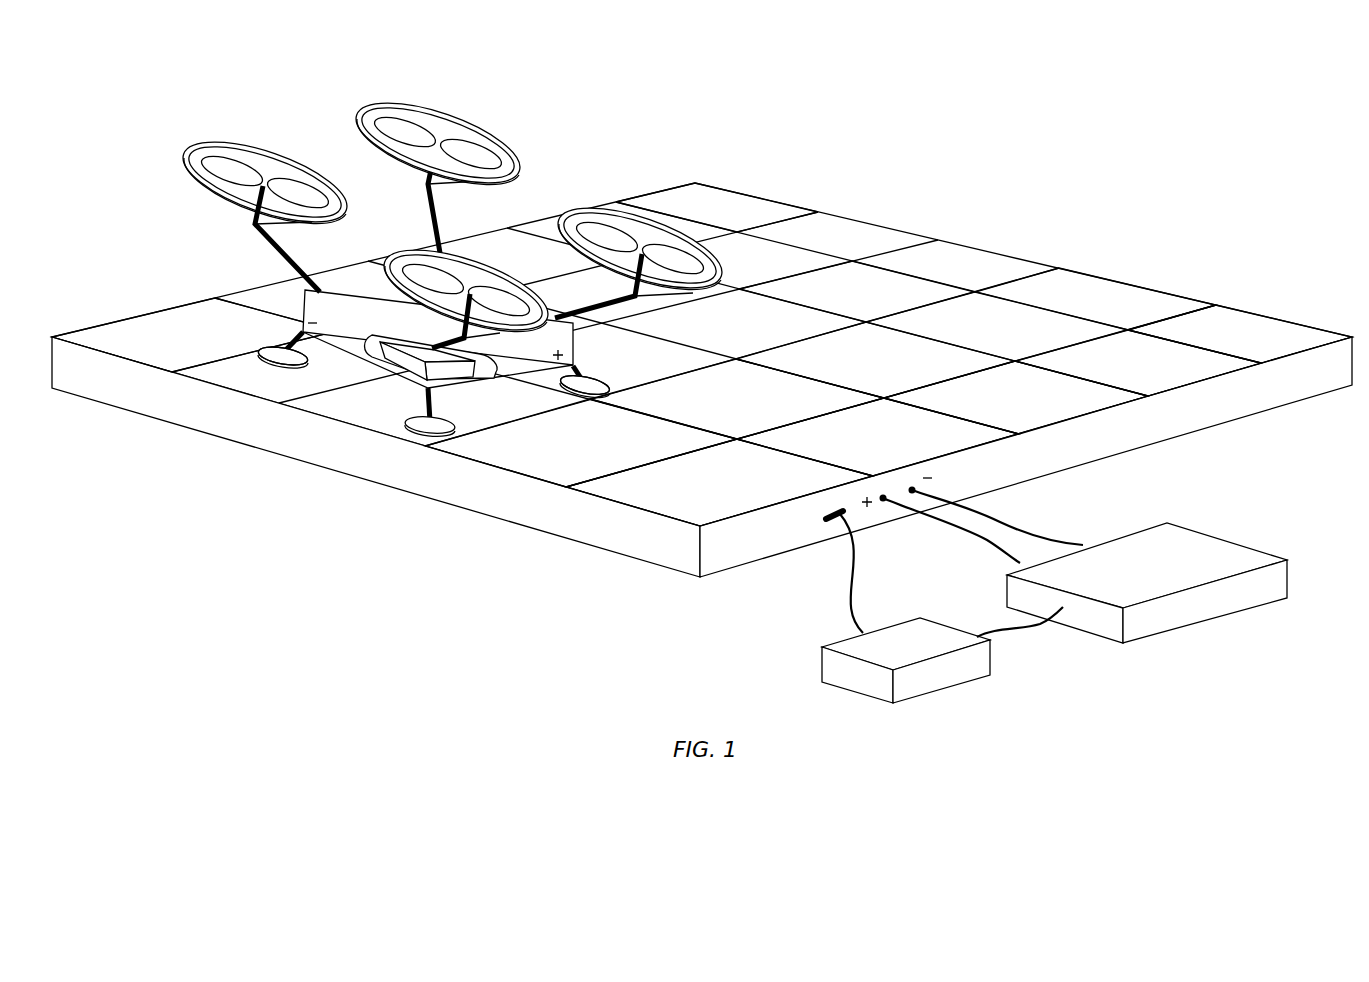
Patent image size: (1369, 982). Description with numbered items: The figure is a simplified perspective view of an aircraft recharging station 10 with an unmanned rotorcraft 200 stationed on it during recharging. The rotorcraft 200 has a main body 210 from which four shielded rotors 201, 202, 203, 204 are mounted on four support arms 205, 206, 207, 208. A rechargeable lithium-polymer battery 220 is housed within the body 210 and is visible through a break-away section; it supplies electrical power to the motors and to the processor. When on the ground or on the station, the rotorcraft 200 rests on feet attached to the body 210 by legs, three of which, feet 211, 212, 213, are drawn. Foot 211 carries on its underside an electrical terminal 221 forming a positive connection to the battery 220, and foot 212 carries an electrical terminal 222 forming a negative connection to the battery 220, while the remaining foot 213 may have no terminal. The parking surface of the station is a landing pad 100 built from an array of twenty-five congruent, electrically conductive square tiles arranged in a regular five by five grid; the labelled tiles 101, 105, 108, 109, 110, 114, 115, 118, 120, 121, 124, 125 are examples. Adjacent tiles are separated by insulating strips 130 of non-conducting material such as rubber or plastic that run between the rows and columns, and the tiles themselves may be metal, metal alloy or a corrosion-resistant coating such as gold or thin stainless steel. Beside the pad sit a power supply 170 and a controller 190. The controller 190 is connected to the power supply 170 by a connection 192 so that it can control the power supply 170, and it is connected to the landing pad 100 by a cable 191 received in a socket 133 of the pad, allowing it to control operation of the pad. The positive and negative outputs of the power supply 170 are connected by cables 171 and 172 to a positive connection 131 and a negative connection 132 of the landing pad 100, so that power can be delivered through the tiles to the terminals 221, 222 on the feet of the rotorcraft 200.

The aircraft recharging station 10 is at (961, 215).
The landing pad 100 is at (702, 366).
The square tile 101 is at (194, 335).
The square tile 105 is at (719, 482).
The square tile 108 is at (581, 443).
The square tile 109 is at (737, 399).
The square tile 110 is at (878, 437).
The square tile 114 is at (875, 360).
The square tile 115 is at (1016, 397).
The square tile 118 is at (857, 291).
The square tile 120 is at (1138, 363).
The square tile 121 is at (717, 207).
The square tile 124 is at (1095, 299).
The square tile 125 is at (1240, 334).
The insulating strips 130 is at (654, 202).
The positive connection 131 is at (885, 506).
The negative connection 132 is at (912, 486).
The socket 133 is at (826, 518).
The power supply 170 is at (1205, 610).
The cable 171 is at (997, 545).
The cable 172 is at (1017, 532).
The controller 190 is at (940, 680).
The cable 191 is at (855, 587).
The connection 192 is at (1022, 630).
The rotorcraft 200 is at (307, 84).
The shielded rotor 201 is at (243, 143).
The shielded rotor 202 is at (402, 105).
The shielded rotor 203 is at (600, 204).
The shielded rotor 204 is at (492, 258).
The support arm 205 is at (256, 238).
The support arm 206 is at (426, 212).
The support arm 207 is at (602, 313).
The support arm 208 is at (447, 340).
The main body 210 is at (300, 302).
The foot 211 is at (617, 392).
The foot 212 is at (262, 358).
The foot 213 is at (410, 418).
The rechargeable lithium-polymer battery 220 is at (462, 376).
The electrical terminal 221 is at (546, 386).
The electrical terminal 222 is at (245, 348).